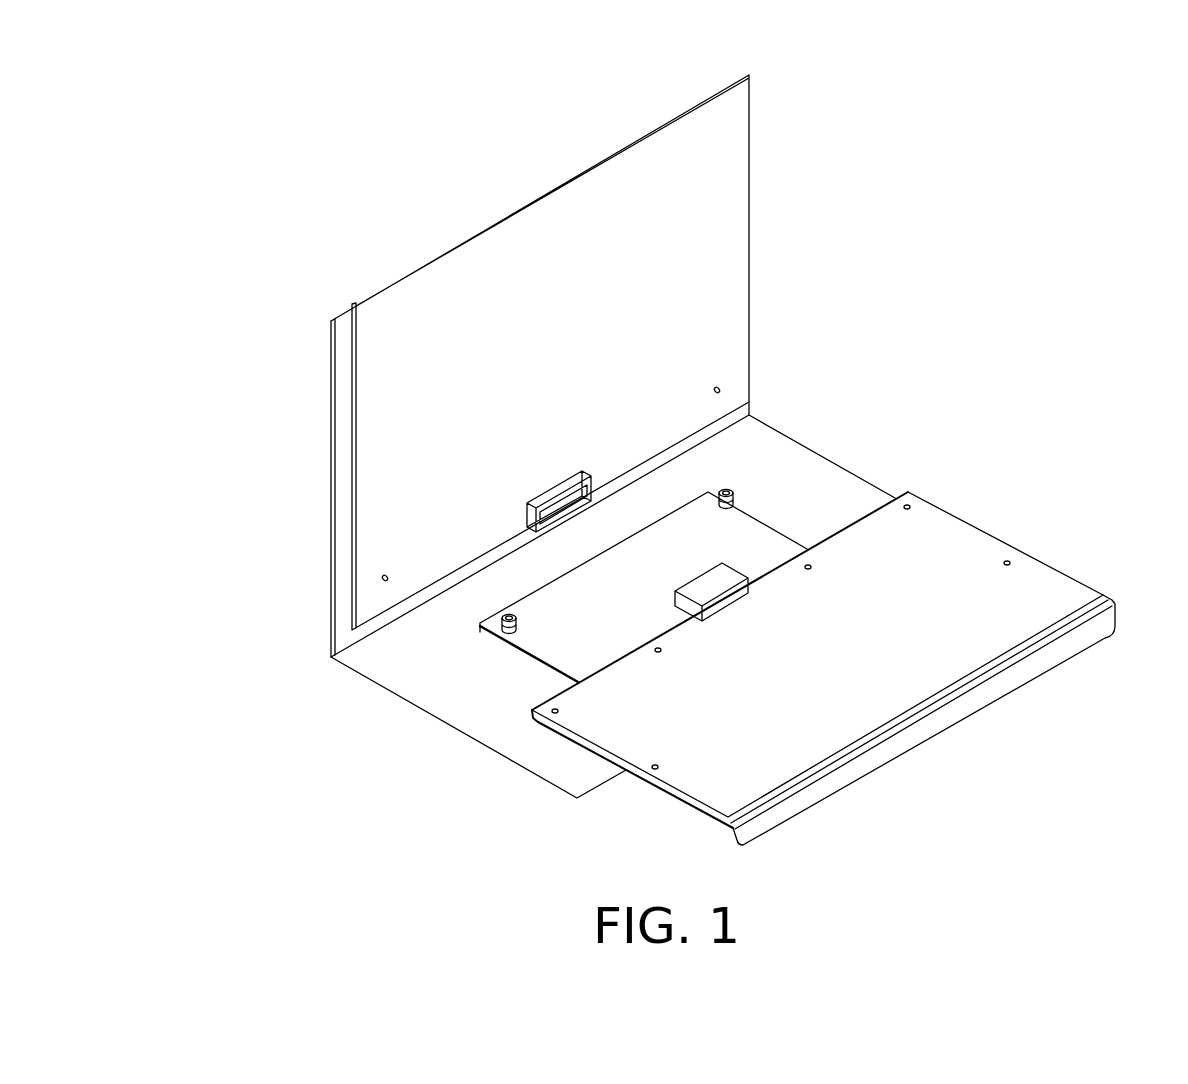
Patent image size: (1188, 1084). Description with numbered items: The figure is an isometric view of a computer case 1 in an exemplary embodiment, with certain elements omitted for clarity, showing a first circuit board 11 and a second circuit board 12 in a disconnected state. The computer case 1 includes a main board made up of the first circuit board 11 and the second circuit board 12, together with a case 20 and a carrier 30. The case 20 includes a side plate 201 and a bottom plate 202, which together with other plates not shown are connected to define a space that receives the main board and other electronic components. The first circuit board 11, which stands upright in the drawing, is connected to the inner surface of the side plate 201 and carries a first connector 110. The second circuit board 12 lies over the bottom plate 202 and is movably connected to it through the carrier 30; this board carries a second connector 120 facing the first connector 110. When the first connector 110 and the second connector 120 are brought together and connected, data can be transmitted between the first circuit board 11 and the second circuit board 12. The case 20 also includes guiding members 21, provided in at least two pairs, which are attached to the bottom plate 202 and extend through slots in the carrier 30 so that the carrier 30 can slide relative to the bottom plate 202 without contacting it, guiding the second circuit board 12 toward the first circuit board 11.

The computer case 1 is at (286, 178).
The first circuit board 11 is at (722, 276).
The first connector 110 is at (546, 490).
The second circuit board 12 is at (952, 545).
The second connector 120 is at (727, 578).
The case 20 is at (550, 550).
The side plate 201 is at (342, 475).
The bottom plate 202 is at (393, 657).
The guiding member 21 is at (731, 488).
The carrier 30 is at (677, 806).